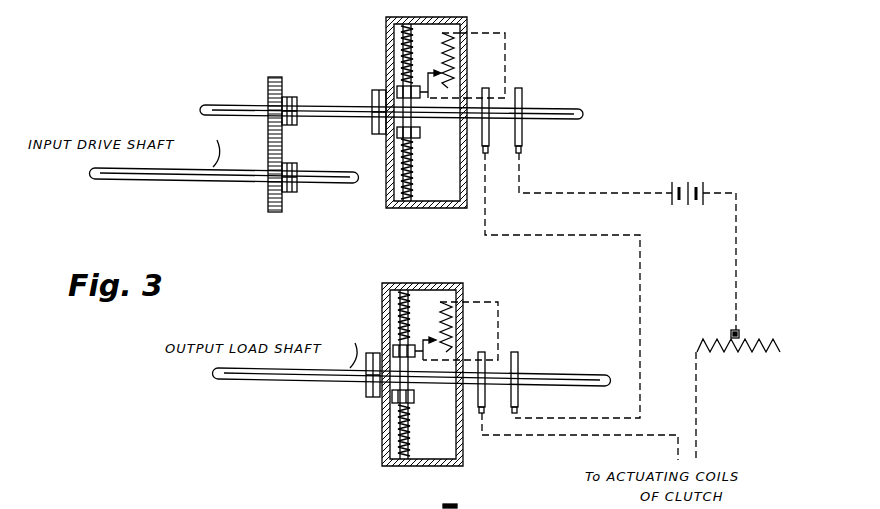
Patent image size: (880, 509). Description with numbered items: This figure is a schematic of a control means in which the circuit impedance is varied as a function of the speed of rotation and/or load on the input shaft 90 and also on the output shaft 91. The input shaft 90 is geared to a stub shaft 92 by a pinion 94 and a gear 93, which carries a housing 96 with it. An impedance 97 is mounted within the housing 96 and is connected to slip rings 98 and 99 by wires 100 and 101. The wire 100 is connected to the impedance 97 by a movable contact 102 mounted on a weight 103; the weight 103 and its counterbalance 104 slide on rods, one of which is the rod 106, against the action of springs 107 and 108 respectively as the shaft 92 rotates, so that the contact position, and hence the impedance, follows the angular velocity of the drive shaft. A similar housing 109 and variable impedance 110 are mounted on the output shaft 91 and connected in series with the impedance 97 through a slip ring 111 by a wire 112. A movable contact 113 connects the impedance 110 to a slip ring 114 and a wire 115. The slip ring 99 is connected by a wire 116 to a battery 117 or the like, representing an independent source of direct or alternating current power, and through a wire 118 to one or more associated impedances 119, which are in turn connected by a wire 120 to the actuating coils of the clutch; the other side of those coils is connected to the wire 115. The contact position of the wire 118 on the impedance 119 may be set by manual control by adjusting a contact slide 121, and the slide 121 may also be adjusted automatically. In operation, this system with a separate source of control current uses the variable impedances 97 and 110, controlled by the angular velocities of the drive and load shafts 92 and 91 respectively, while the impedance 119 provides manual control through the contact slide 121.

The input shaft 90 is at (196, 181).
The output shaft 91 is at (287, 380).
The stub shaft 92 is at (254, 97).
The gear 93 is at (283, 209).
The pinion 94 is at (282, 121).
The housing 96 is at (388, 40).
The impedance 97 is at (456, 55).
The slip ring 98 is at (492, 134).
The slip ring 99 is at (523, 136).
The wire 100 is at (463, 97).
The wire 101 is at (496, 31).
The movable contact 102 is at (431, 72).
The weight 103 is at (397, 90).
The counterbalance 104 is at (420, 132).
The rod 106 is at (411, 177).
The spring 107 is at (439, 37).
The spring 108 is at (411, 158).
The housing 109 is at (464, 458).
The variable impedance 110 is at (452, 327).
The slip ring 111 is at (521, 358).
The wire 112 is at (485, 225).
The movable contact 113 is at (418, 339).
The slip ring 114 is at (484, 419).
The wire 115 is at (586, 432).
The wire 116 is at (519, 189).
The battery 117 is at (693, 186).
The wire 118 is at (739, 275).
The impedance 119 is at (751, 341).
The wire 120 is at (697, 411).
The contact slide 121 is at (730, 334).